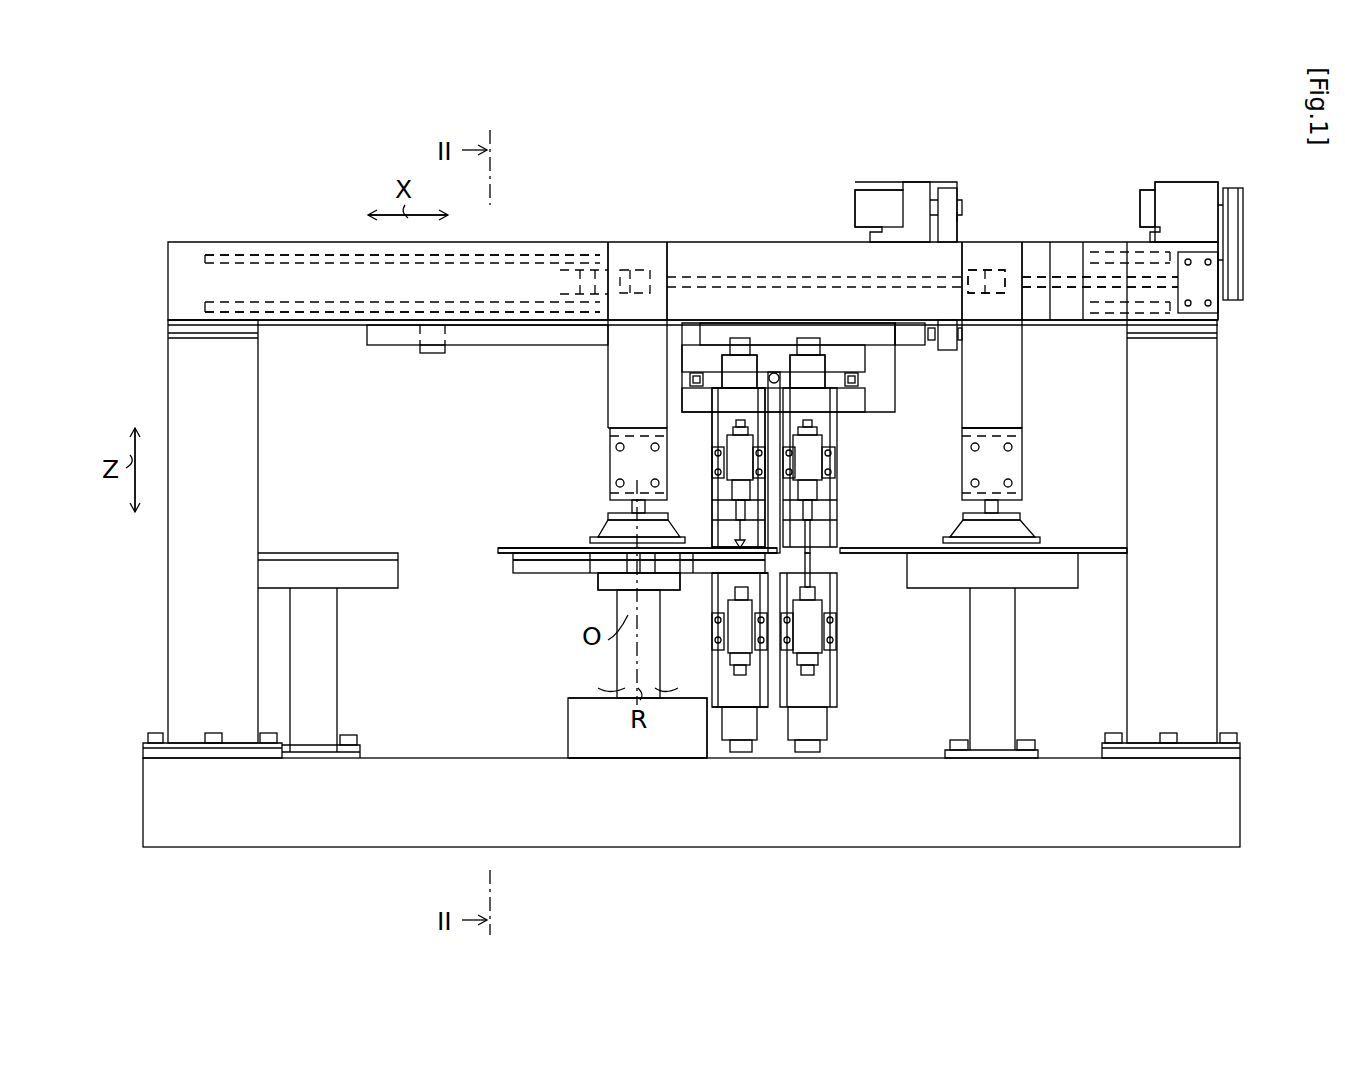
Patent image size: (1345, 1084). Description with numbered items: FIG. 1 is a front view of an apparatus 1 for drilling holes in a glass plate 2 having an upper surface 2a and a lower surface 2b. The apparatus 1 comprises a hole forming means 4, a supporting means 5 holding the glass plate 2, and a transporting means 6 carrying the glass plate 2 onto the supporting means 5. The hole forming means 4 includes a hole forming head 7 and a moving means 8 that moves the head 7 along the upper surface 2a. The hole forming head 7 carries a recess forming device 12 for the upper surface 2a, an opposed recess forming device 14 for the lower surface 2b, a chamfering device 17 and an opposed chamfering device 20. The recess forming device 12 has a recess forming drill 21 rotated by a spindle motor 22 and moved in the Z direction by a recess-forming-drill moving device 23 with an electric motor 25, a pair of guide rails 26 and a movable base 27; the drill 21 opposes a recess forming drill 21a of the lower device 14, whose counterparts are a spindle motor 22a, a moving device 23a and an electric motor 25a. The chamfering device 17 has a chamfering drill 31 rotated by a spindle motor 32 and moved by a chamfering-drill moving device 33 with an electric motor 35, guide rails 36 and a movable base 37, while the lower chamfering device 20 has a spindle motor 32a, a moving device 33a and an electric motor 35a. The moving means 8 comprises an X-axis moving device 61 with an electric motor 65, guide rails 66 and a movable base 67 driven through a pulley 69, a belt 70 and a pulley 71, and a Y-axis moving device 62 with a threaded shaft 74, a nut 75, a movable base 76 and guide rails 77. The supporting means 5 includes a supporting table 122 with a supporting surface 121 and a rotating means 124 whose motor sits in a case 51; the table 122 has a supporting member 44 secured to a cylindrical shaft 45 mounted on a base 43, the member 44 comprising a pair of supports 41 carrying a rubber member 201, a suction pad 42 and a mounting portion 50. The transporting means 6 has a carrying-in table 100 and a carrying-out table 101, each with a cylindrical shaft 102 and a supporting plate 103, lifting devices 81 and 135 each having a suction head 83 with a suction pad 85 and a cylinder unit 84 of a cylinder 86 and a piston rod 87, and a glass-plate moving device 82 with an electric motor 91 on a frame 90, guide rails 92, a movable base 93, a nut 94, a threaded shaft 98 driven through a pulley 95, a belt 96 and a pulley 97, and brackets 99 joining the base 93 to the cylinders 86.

The apparatus for drilling holes in a glass plate 1 is at (162, 225).
The glass plate 2 is at (500, 548).
The upper surface 2a is at (1112, 548).
The lower surface 2b is at (1112, 553).
The hole forming means 4 is at (962, 188).
The supporting means 5 is at (568, 760).
The transporting means 6 is at (1158, 172).
The hole forming head 7 is at (845, 705).
The moving means 8 is at (855, 182).
The recess forming device 12 is at (840, 462).
The recess forming device 14 is at (850, 632).
The chamfering device 17 is at (722, 360).
The chamfering device 20 is at (712, 760).
The recess forming drill 21 is at (812, 528).
The recess forming drill 21a is at (812, 570).
The spindle motor 22 is at (818, 470).
The spindle motor 22a is at (815, 640).
The recess-forming-drill moving device 23 is at (812, 355).
The recess-forming-drill moving device 23a is at (820, 752).
The electric motor 25 is at (825, 360).
The electric motor 25a is at (820, 725).
The guide rails 26 is at (812, 425).
The movable base 27 is at (820, 490).
The chamfering drill 31 is at (735, 540).
The spindle motor 32 is at (735, 458).
The spindle motor 32a is at (732, 637).
The chamfering-drill moving device 33 is at (752, 355).
The chamfering-drill moving device 33a is at (737, 758).
The electric motor 35 is at (740, 355).
The electric motor 35a is at (752, 745).
The guide rails 36 is at (747, 430).
The movable base 37 is at (730, 487).
The supports 41 is at (515, 573).
The suction pad 42 is at (660, 573).
The base 43 is at (1238, 792).
The supporting member 44 is at (560, 580).
The cylindrical shaft 45 is at (617, 658).
The mounting portion 50 is at (625, 583).
The case 51 is at (640, 760).
The X-axis moving device 61 is at (960, 203).
The Y-axis moving device 62 is at (865, 405).
The electric motor 65 is at (878, 190).
The guide rails 66 is at (472, 345).
The movable base 67 is at (865, 365).
The pulley 69 is at (960, 218).
The belt 70 is at (947, 190).
The pulley 71 is at (958, 338).
The threaded shaft 74 is at (780, 372).
The nut 75 is at (776, 372).
The movable base 76 is at (682, 400).
The guide rails 77 is at (690, 378).
The lifting device 81 is at (1025, 428).
The glass-plate moving device 82 is at (1140, 185).
The suction head 83 is at (598, 530).
The cylinder unit 84 is at (605, 415).
The suction pad 85 is at (605, 555).
The cylinder 86 is at (610, 462).
The piston rod 87 is at (630, 505).
The frame 90 is at (168, 275).
The electric motor 91 is at (1168, 190).
The guide rails 92 is at (290, 262).
The movable base 93 is at (1040, 282).
The nut 94 is at (995, 278).
The pulley 95 is at (1243, 188).
The belt 96 is at (1230, 188).
The pulley 97 is at (1243, 300).
The threaded shaft 98 is at (1125, 280).
The brackets 99 is at (608, 360).
The carrying-in table 100 is at (1030, 695).
The carrying-out table 101 is at (338, 695).
The cylindrical shaft 102 is at (335, 655).
The supporting plate 103 is at (368, 588).
The supporting surface 121 is at (535, 549).
The supporting table 122 is at (612, 688).
The rotating means 124 is at (568, 735).
The lifting device 135 is at (605, 445).
The rubber member 201 is at (513, 560).